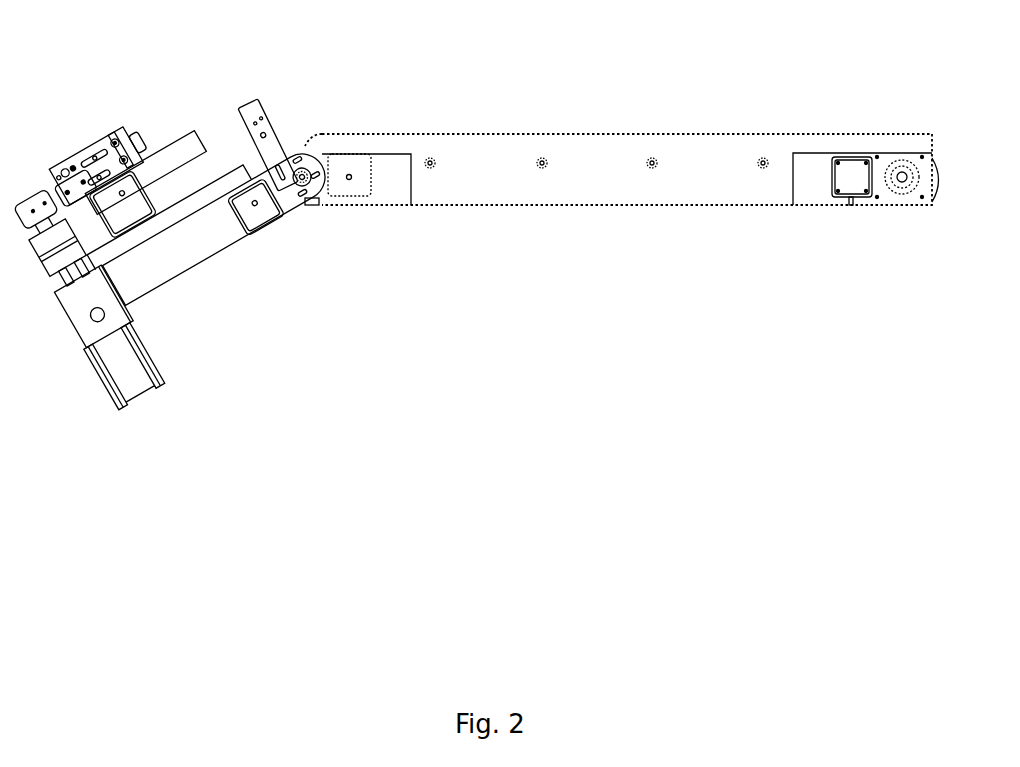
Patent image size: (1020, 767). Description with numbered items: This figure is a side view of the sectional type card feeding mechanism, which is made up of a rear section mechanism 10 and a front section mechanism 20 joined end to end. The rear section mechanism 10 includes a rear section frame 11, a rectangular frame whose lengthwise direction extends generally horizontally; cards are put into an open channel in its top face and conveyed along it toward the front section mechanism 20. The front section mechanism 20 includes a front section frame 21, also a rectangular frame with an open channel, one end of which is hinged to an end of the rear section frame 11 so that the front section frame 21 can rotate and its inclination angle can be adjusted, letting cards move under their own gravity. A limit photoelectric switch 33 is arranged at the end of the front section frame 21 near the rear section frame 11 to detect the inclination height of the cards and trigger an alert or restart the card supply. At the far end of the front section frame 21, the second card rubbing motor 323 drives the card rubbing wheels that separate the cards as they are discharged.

The rear section mechanism 10 is at (622, 165).
The rear section frame 11 is at (637, 193).
The front section mechanism 20 is at (215, 276).
The front section frame 21 is at (215, 241).
The limit photoelectric switch 33 is at (247, 106).
The second card rubbing motor 323 is at (135, 383).